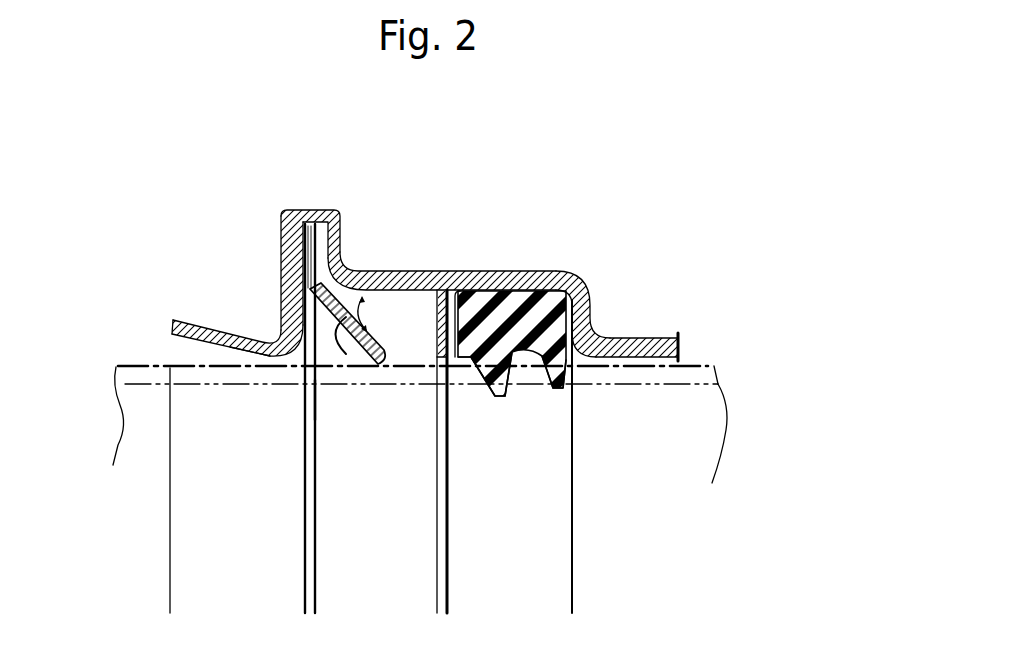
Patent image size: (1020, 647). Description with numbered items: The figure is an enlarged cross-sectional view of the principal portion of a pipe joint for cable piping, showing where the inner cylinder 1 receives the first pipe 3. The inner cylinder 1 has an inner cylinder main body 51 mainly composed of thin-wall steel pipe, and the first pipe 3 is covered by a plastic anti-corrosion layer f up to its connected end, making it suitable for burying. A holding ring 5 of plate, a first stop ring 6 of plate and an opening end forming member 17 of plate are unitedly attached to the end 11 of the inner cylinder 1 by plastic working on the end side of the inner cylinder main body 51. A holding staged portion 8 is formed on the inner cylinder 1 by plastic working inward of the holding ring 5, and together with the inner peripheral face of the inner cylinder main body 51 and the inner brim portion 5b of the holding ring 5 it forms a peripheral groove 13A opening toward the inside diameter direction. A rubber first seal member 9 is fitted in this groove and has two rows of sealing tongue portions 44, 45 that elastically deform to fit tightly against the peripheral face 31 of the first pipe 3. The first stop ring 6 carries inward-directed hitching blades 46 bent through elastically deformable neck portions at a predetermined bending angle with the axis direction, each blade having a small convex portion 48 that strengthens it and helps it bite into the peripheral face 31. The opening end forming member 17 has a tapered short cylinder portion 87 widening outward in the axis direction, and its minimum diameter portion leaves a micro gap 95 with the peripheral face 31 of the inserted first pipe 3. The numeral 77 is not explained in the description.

The inner cylinder 1 is at (411, 353).
The first pipe 3 is at (693, 354).
The holding ring 5 is at (420, 270).
The inner brim portion 5b is at (455, 292).
The first stop ring 6 is at (356, 364).
The holding staged portion 8 is at (552, 266).
The first seal member 9 is at (497, 310).
The end of the inner cylinder 11 is at (308, 204).
The peripheral groove 13A is at (476, 363).
The opening end forming member 17 is at (240, 326).
The peripheral face of the first pipe 31 is at (638, 336).
The sealing tongue portion 44 is at (497, 392).
The sealing tongue portion 45 is at (562, 384).
The hitching blade 46 is at (384, 348).
The small convex portion 48 is at (312, 402).
The inner cylinder main body 51 is at (402, 270).
The slinger cylindrical portion 77 is at (273, 210).
The tapered short cylinder portion 87 is at (189, 321).
The micro gap 95 is at (256, 360).
The plastic anti-corrosion layer f is at (708, 365).